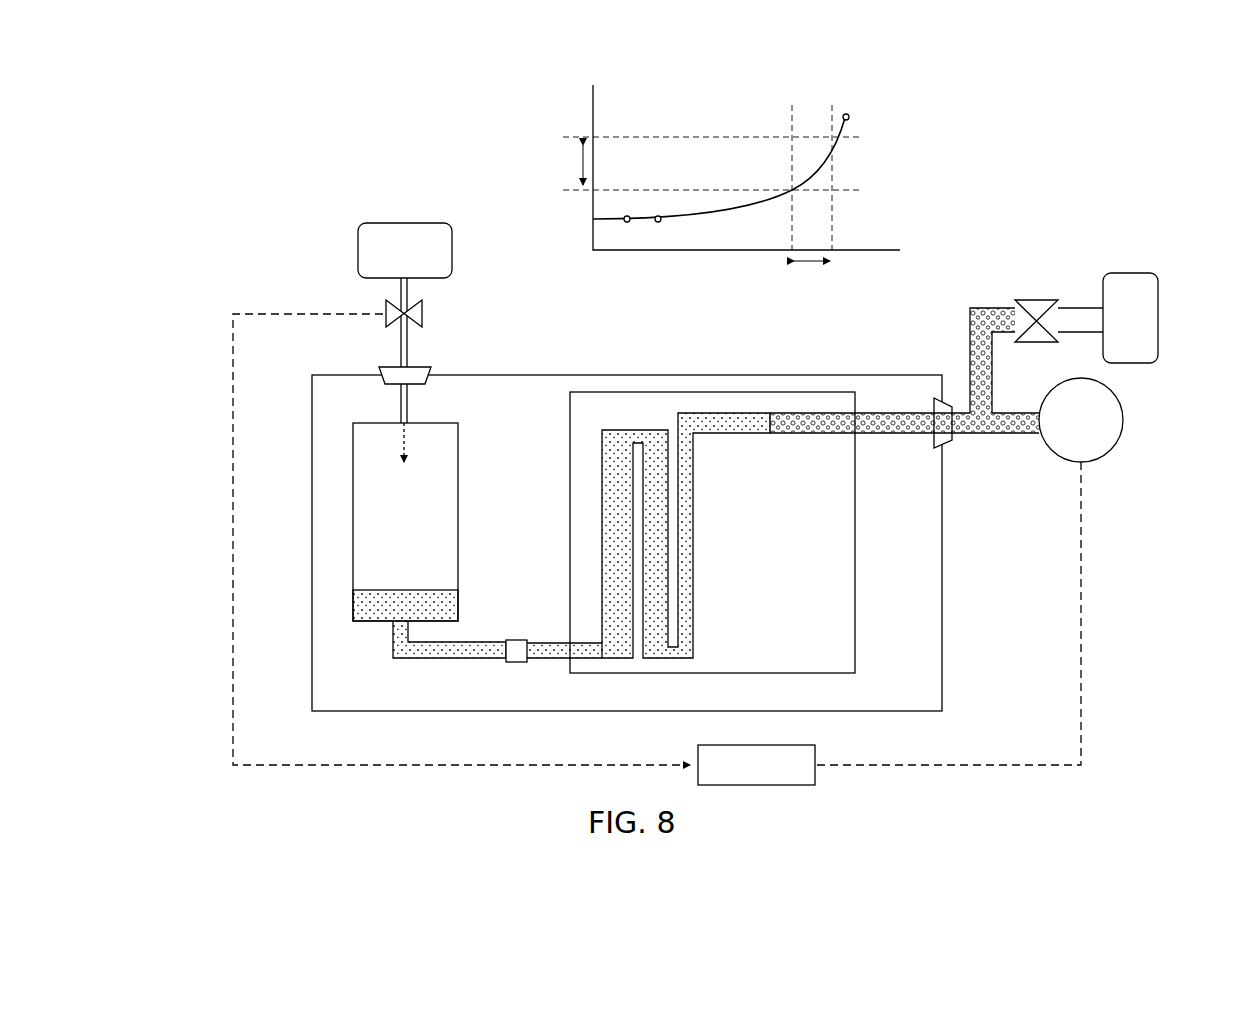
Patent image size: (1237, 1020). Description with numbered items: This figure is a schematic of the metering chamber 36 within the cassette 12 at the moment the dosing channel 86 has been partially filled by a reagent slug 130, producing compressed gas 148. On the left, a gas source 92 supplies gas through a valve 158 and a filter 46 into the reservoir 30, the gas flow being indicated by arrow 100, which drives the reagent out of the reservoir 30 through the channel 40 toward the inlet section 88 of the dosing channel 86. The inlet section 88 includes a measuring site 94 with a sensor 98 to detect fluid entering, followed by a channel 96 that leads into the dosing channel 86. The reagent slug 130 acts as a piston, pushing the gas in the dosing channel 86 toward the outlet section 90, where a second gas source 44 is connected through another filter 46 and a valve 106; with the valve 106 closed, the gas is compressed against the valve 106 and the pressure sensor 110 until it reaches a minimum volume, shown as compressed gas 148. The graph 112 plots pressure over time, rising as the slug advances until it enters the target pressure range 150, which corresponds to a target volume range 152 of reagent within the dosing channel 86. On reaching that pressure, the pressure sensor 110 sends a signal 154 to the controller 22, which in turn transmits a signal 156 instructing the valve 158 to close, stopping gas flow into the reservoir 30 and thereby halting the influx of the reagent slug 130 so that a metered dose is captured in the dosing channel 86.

The cassette 12 is at (376, 198).
The controller 22 is at (817, 752).
The reservoir 30 is at (460, 478).
The metering chamber 36 is at (570, 410).
The channel 40 is at (425, 662).
The gas source 44 is at (1128, 273).
The filter 46 is at (383, 368).
The dosing channel 86 is at (695, 506).
The inlet section 88 is at (547, 674).
The outlet section 90 is at (1000, 300).
The gas source 92 is at (455, 246).
The measuring site 94 is at (500, 669).
The channel 96 is at (540, 642).
The sensor 98 is at (510, 638).
The gas flow arrow 100 is at (406, 437).
The valve 106 is at (1040, 345).
The pressure sensor 110 is at (1124, 420).
The graph 112 is at (810, 70).
The reagent slug 130 is at (680, 413).
The compressed gas 148 is at (970, 354).
The target pressure range 150 is at (557, 154).
The target volume range 152 is at (810, 275).
The signal 154 is at (1079, 672).
The signal 156 is at (592, 763).
The valve 158 is at (423, 312).